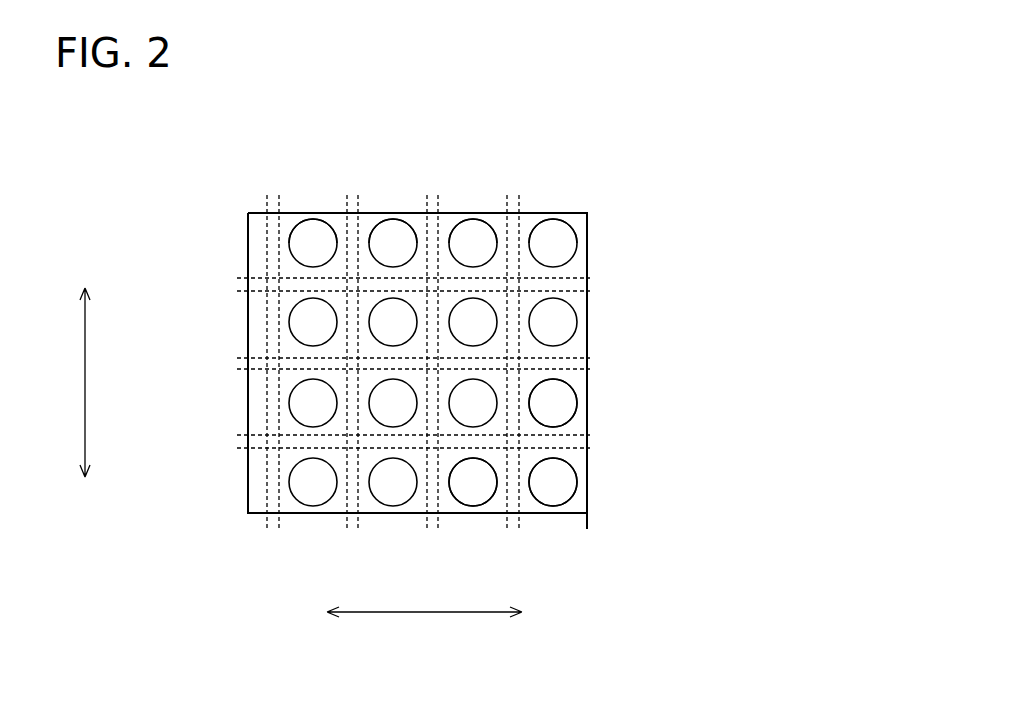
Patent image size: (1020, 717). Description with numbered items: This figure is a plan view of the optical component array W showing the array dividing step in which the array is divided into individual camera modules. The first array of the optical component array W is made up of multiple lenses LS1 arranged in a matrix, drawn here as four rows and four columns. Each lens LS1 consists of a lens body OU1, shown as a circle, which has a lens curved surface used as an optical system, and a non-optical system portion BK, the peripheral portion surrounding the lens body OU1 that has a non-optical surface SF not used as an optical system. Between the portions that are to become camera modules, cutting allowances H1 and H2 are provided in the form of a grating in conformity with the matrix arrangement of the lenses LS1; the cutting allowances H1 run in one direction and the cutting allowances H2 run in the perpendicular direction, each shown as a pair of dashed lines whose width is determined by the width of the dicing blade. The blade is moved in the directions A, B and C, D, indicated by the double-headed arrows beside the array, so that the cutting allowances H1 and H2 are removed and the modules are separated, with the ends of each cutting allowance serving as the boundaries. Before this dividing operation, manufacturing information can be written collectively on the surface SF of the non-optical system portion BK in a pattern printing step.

The optical component array W is at (572, 190).
The cutting allowance H1 is at (274, 213).
The cutting allowance H2 is at (255, 282).
The non-optical system portion BK is at (283, 235).
The lens LS1 is at (498, 305).
The surface SF is at (322, 213).
The lens body OU1 is at (473, 482).
The direction A is at (85, 364).
The direction B is at (85, 514).
The direction C is at (558, 627).
The direction D is at (411, 623).